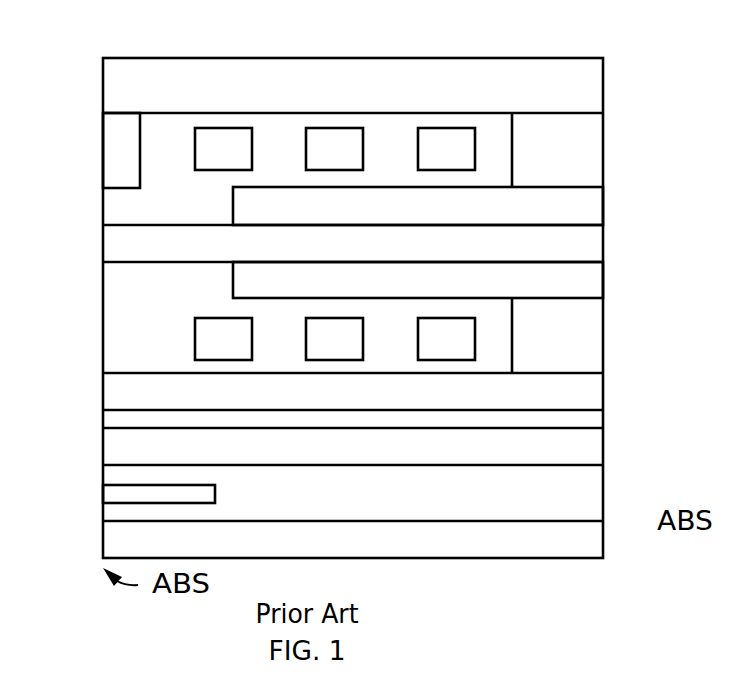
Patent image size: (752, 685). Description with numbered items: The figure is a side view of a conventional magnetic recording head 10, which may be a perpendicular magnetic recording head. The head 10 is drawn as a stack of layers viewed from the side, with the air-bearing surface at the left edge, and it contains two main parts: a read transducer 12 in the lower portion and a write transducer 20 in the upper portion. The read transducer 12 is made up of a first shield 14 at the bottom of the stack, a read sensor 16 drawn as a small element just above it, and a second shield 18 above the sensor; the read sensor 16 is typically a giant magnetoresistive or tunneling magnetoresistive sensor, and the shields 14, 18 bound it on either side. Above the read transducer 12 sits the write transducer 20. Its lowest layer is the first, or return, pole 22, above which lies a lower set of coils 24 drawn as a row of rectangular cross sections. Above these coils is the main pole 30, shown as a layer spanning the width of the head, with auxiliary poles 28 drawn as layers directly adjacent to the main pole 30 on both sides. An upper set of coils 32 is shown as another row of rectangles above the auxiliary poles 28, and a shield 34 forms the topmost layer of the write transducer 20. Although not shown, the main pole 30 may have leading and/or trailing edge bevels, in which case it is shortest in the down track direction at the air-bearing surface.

The magnetic recording head 10 is at (292, 33).
The read transducer 12 is at (66, 467).
The shield 14 is at (603, 543).
The sensor 16 is at (103, 495).
The shield 18 is at (603, 447).
The write transducer 20 is at (65, 173).
The return pole 22 is at (103, 392).
The coils 24 is at (137, 354).
The auxiliary poles 28 is at (603, 203).
The main pole 30 is at (103, 245).
The coils 32 is at (147, 141).
The shield 34 is at (603, 72).